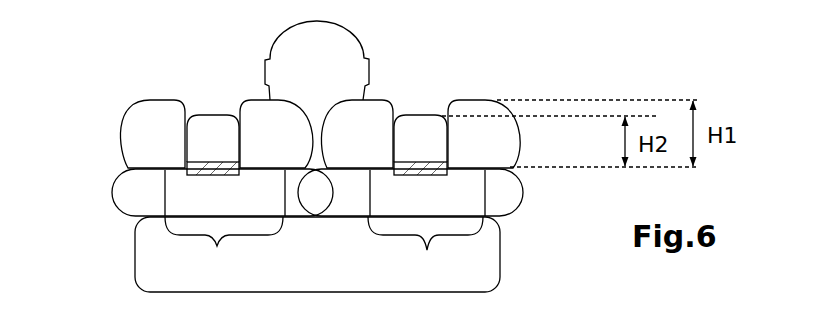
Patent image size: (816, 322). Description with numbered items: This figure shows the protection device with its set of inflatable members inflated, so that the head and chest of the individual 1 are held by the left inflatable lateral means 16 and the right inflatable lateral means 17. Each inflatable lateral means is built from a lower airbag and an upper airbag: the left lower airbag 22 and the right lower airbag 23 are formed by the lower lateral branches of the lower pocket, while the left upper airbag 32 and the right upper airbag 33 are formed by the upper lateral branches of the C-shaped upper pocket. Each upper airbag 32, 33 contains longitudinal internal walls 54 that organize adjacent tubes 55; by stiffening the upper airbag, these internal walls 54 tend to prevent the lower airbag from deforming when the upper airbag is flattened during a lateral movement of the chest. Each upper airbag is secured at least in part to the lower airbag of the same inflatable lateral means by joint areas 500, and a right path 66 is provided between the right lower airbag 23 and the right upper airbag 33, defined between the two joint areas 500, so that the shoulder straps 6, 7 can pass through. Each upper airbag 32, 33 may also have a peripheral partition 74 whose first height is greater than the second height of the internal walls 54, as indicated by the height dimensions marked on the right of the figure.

The individual 1 is at (500, 256).
The shoulder strap 6 is at (410, 176).
The shoulder strap 7 is at (200, 176).
The left inflatable lateral means 16 is at (456, 105).
The right inflatable lateral means 17 is at (200, 112).
The left lower airbag 22 is at (523, 198).
The right lower airbag 23 is at (112, 196).
The left upper airbag 32 is at (530, 128).
The right upper airbag 33 is at (106, 147).
The internal wall 54 is at (448, 144).
The tube 55 is at (140, 147).
The right path 66 is at (438, 50).
The peripheral partition 74 is at (521, 142).
The joint area 500 is at (324, 250).